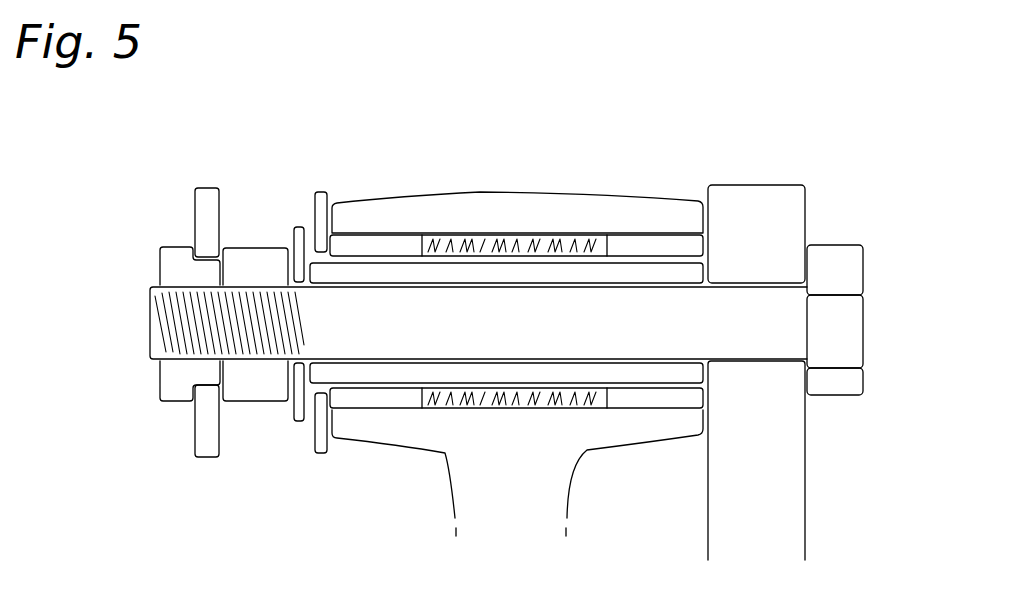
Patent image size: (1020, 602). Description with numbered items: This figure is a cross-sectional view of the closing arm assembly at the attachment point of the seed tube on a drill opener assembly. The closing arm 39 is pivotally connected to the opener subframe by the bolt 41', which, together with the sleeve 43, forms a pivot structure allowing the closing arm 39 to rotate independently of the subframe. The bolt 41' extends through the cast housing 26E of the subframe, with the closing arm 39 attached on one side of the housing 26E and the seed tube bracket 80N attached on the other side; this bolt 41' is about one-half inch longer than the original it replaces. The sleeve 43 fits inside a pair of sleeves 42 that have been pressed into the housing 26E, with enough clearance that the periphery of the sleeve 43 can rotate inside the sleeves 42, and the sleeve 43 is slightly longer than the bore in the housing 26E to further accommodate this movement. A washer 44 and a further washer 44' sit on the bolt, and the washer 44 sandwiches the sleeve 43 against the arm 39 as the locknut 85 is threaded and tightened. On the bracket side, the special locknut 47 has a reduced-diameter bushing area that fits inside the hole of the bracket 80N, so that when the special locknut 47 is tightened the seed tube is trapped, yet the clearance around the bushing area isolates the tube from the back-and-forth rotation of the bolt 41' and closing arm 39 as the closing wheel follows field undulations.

The housing 26E is at (487, 190).
The closing arm 39 is at (750, 213).
The bolt 41' is at (870, 320).
The sleeves 42 is at (649, 244).
The sleeve 43 is at (633, 272).
The washer 44 is at (229, 258).
The washer 44' is at (293, 274).
The special locknut 47 is at (165, 403).
The bracket 80N is at (190, 205).
The locknut 85 is at (258, 403).